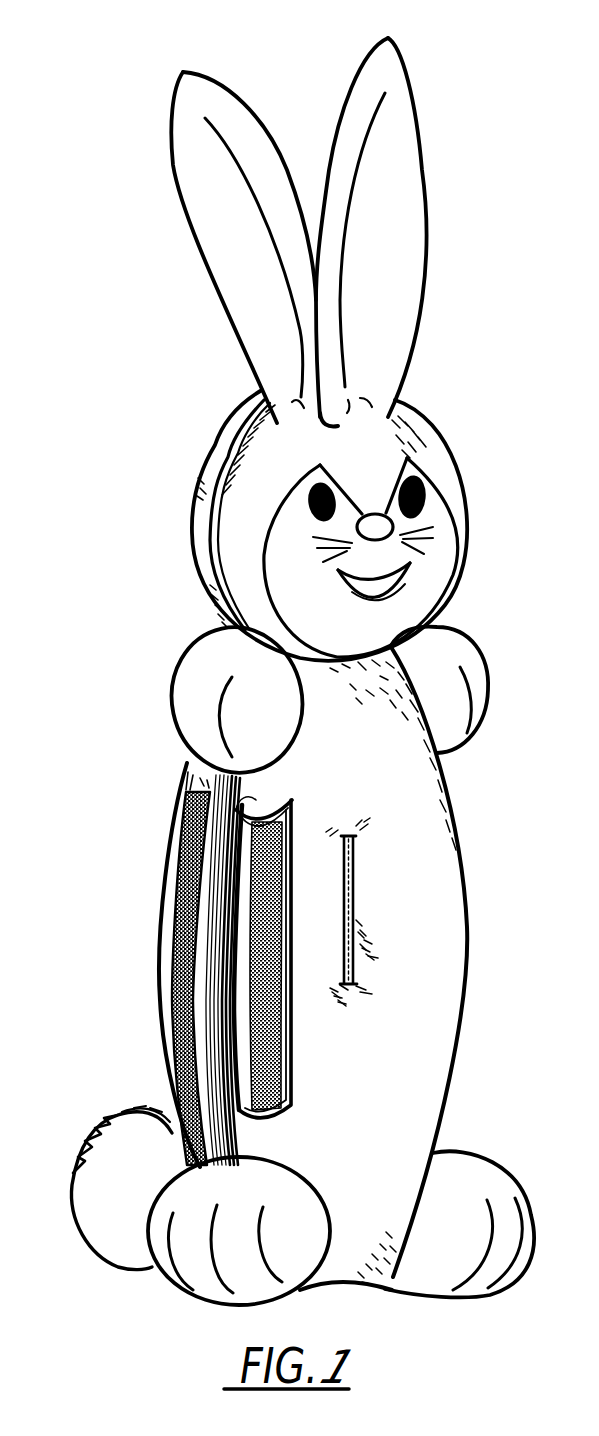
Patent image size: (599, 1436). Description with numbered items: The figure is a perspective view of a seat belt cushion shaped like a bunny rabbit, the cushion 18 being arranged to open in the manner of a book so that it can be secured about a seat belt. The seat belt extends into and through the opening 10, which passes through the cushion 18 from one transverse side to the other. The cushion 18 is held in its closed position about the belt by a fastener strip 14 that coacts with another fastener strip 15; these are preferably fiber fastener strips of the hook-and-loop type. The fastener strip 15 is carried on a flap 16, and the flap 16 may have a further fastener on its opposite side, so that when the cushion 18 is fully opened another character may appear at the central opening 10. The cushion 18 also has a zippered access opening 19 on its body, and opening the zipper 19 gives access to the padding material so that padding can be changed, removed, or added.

The opening 10 is at (218, 1085).
The fastener strip 14 is at (176, 900).
The fastener strip 15 is at (270, 1060).
The flap 16 is at (272, 800).
The cushion 18 is at (447, 843).
The zippered access opening 19 is at (357, 875).